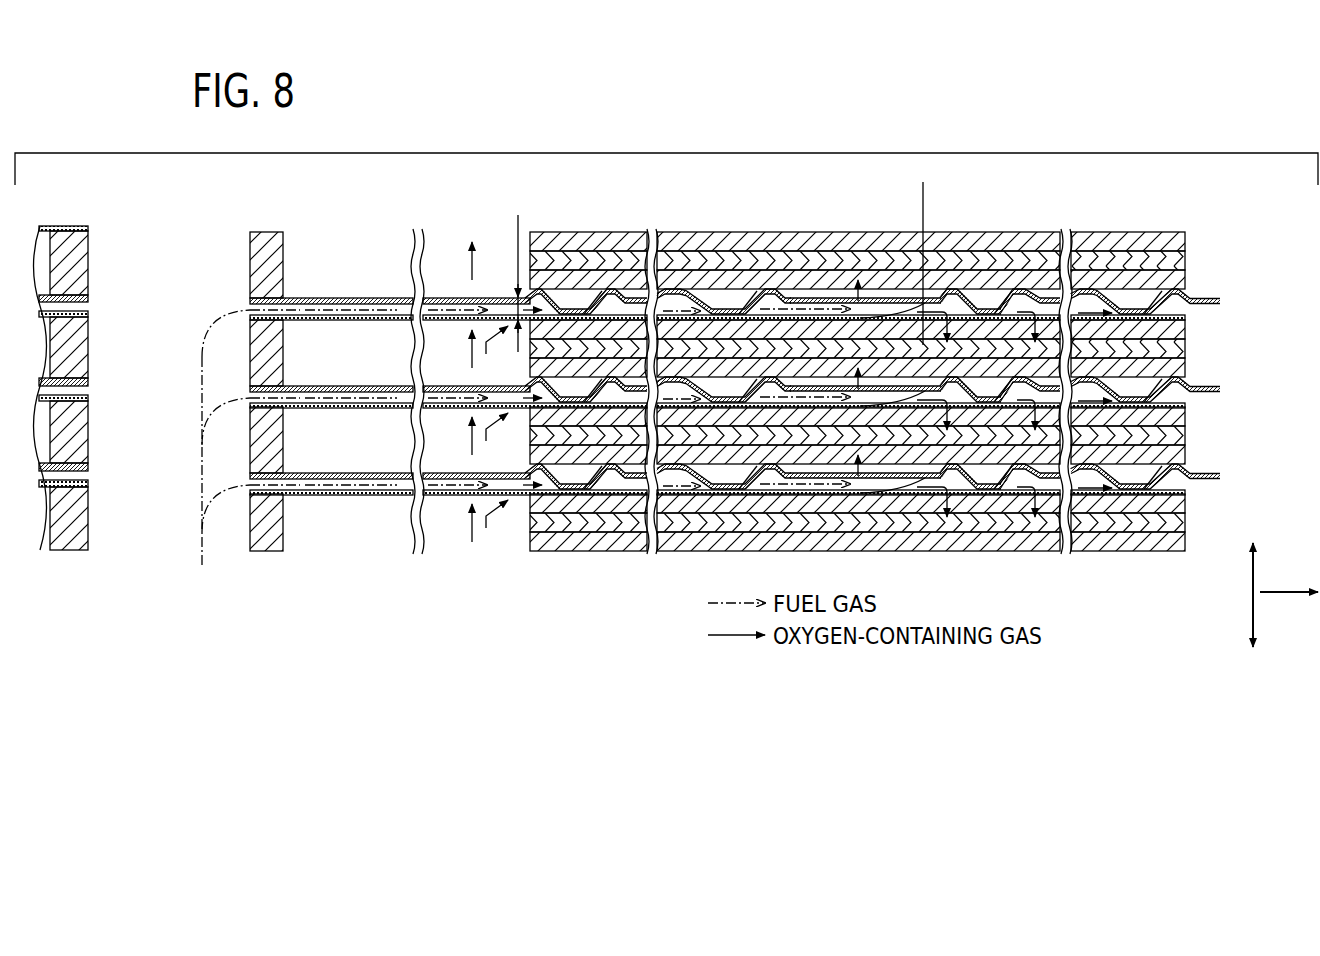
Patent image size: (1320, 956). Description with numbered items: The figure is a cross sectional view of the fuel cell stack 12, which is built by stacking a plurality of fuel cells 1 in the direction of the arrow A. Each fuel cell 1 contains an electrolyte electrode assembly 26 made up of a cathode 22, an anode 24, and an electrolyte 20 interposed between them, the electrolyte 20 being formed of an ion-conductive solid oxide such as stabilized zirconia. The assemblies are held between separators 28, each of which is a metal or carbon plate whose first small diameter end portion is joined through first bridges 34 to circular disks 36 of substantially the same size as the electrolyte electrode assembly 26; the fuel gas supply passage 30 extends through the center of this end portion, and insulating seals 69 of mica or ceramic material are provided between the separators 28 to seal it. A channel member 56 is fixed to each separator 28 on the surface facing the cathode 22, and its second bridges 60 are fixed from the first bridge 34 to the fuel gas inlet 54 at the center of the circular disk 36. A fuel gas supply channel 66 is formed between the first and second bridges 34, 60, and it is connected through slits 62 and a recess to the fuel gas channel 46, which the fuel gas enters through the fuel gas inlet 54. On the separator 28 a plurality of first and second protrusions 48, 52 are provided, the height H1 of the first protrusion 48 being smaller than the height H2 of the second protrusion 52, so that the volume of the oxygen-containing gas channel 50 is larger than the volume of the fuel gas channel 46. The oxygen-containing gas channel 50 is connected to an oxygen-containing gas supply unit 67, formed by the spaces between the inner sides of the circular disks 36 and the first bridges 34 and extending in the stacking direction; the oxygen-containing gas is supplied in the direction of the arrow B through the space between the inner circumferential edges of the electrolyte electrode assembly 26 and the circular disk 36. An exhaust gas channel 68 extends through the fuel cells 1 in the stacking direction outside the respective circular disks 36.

The fuel cell 1 is at (1288, 367).
The fuel cell stack 12 is at (394, 191).
The electrolyte 20 is at (1184, 259).
The cathode 22 is at (1184, 238).
The anode 24 is at (1183, 273).
The electrolyte electrode assembly 26 is at (1243, 222).
The separator 28 is at (1214, 388).
The fuel gas supply passage 30 is at (133, 240).
The first bridge 34 is at (308, 296).
The circular disk 36 is at (1081, 289).
The fuel gas channel 46 is at (818, 291).
The first protrusion 48 is at (763, 293).
The oxygen-containing gas channel 50 is at (951, 313).
The second protrusion 52 is at (994, 313).
The fuel gas inlet 54 is at (871, 308).
The channel member 56 is at (351, 322).
The second bridge 60 is at (316, 318).
The slit 62 is at (242, 313).
The fuel gas supply channel 66 is at (350, 298).
The oxygen-containing gas supply unit 67 is at (322, 443).
The exhaust gas channel 68 is at (1194, 343).
The insulating seal 69 is at (274, 362).
The height of first protrusion H1 is at (924, 251).
The height of second protrusion H2 is at (517, 272).
The stacking direction arrow A is at (1241, 595).
The oxygen-containing gas supply direction arrow B is at (1289, 578).